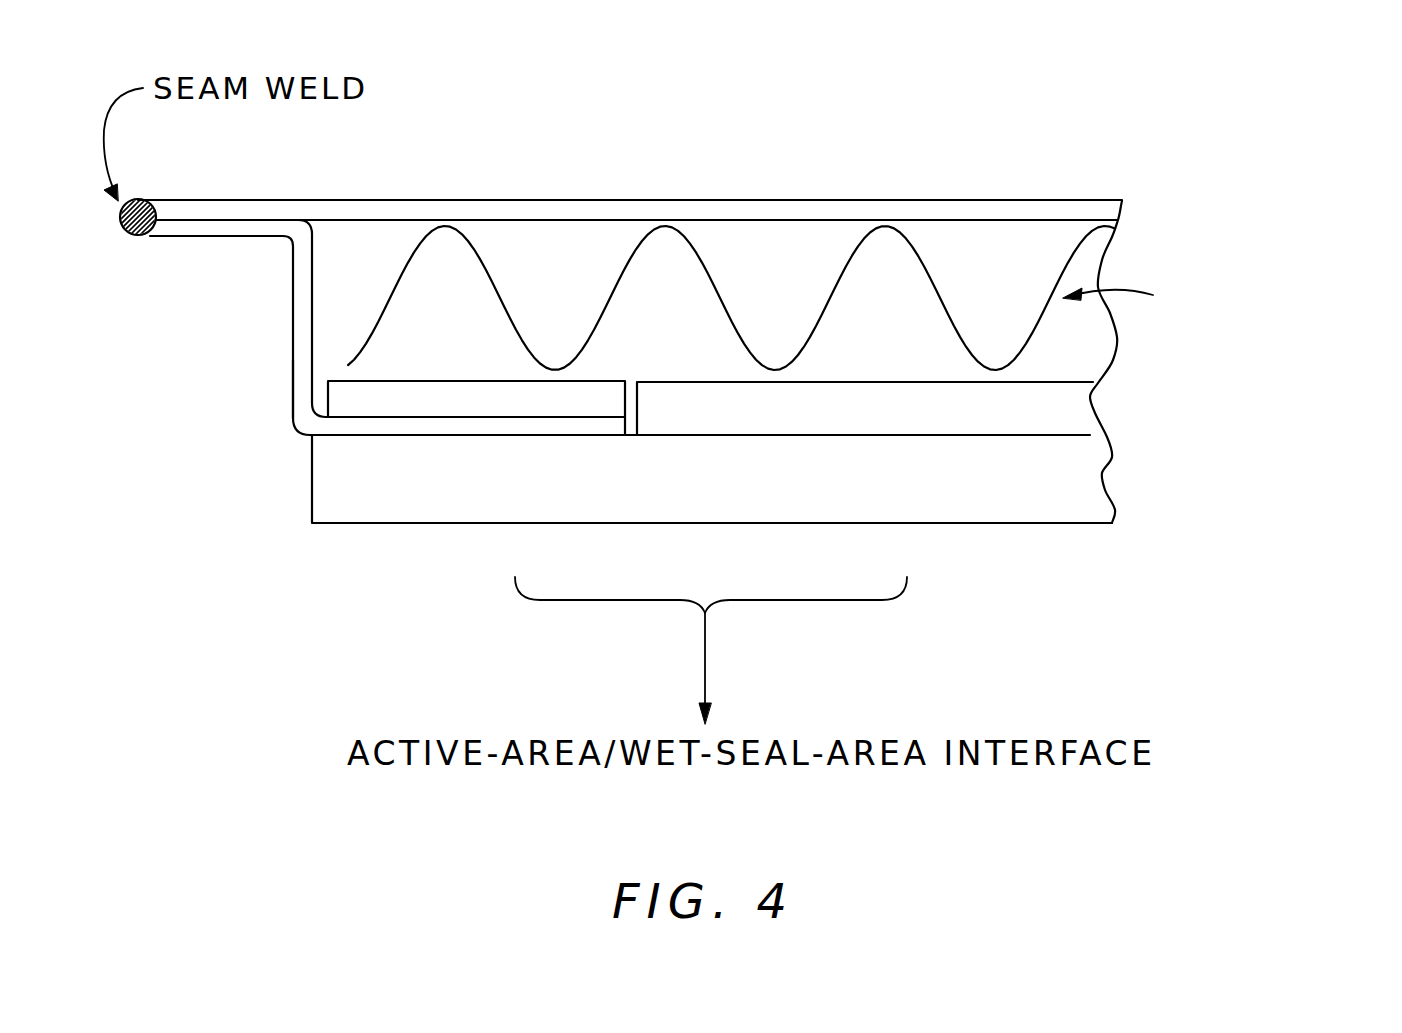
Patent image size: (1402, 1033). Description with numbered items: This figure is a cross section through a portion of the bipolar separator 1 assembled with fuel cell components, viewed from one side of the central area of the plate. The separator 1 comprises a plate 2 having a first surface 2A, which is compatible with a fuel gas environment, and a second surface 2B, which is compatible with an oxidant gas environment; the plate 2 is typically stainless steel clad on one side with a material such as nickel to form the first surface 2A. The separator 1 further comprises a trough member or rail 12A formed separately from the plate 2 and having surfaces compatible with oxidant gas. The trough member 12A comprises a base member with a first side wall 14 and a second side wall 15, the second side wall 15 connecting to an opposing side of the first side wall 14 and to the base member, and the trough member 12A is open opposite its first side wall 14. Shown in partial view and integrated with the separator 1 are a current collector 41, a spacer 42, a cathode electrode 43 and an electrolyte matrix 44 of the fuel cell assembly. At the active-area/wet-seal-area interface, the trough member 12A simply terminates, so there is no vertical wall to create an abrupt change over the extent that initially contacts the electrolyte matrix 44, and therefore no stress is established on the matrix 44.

The bipolar separator 1 is at (258, 199).
The plate 2 is at (487, 212).
The first surface 2A is at (604, 200).
The second surface 2B is at (756, 220).
The first side wall 14 is at (303, 304).
The trough member 12A is at (299, 385).
The second side wall 15 is at (446, 424).
The current collector 41 is at (1032, 328).
The spacer 42 is at (362, 400).
The cathode electrode 43 is at (990, 399).
The electrolyte matrix 44 is at (590, 490).